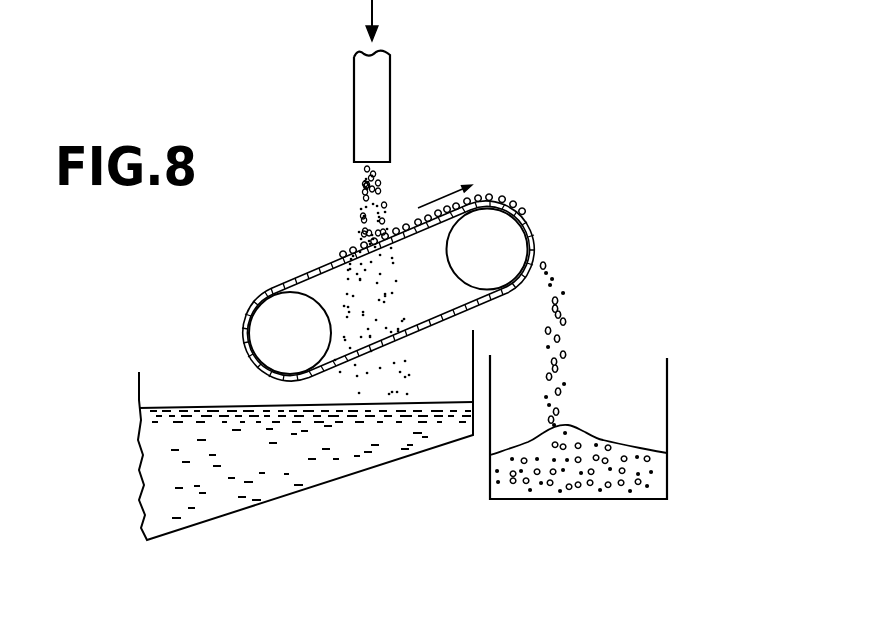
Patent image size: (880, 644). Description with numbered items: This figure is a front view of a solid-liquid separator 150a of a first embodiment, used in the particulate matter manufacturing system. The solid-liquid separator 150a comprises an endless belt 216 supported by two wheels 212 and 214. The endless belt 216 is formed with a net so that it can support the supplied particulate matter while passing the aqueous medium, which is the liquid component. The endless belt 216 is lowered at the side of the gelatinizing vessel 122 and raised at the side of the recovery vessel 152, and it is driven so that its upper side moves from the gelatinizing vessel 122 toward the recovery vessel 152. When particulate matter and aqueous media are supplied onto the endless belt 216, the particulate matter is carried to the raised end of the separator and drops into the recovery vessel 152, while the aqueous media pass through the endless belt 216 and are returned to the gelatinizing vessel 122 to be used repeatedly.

The solid-liquid separator 150a is at (548, 192).
The wheel 212 is at (260, 326).
The wheel 214 is at (503, 244).
The endless belt 216 is at (300, 287).
The gelatinizing vessel 122 is at (328, 468).
The recovery vessel 152 is at (667, 434).